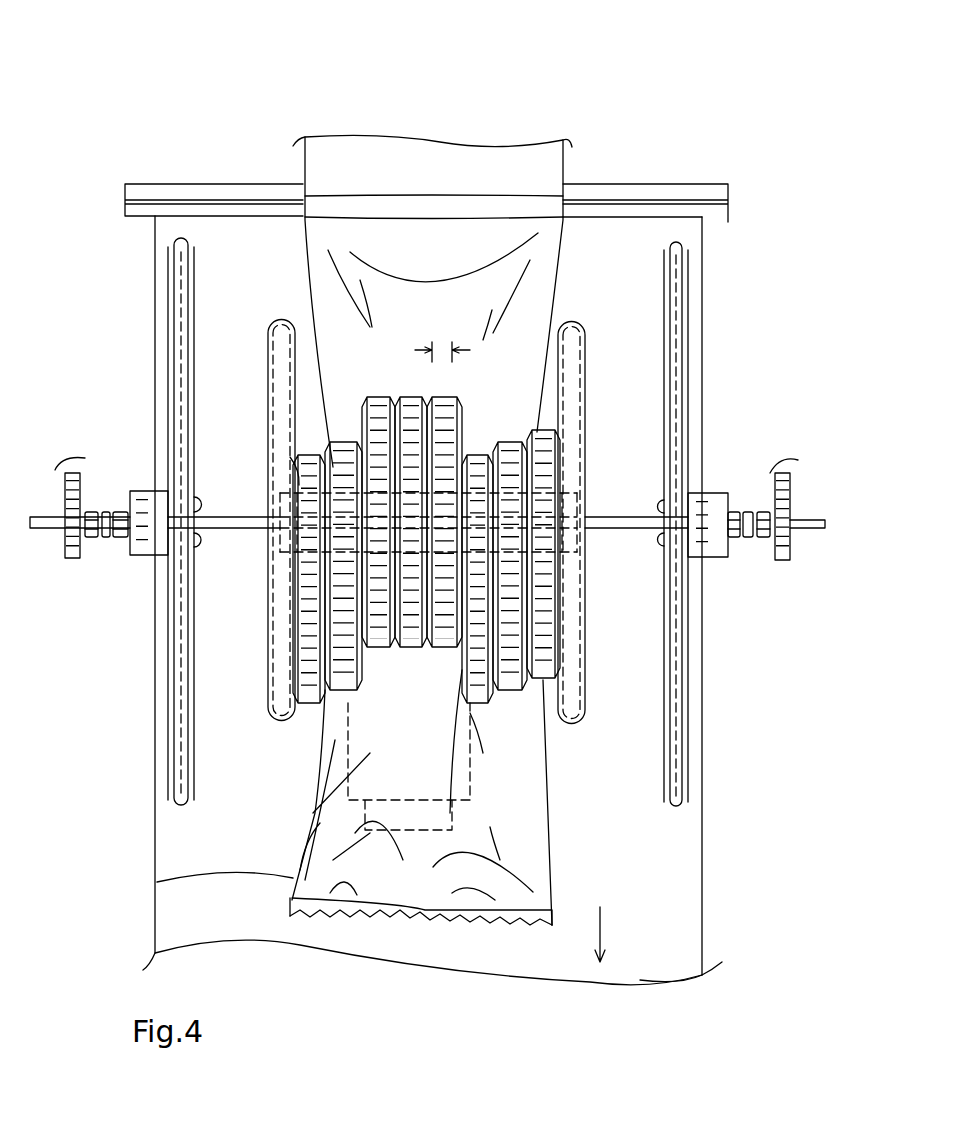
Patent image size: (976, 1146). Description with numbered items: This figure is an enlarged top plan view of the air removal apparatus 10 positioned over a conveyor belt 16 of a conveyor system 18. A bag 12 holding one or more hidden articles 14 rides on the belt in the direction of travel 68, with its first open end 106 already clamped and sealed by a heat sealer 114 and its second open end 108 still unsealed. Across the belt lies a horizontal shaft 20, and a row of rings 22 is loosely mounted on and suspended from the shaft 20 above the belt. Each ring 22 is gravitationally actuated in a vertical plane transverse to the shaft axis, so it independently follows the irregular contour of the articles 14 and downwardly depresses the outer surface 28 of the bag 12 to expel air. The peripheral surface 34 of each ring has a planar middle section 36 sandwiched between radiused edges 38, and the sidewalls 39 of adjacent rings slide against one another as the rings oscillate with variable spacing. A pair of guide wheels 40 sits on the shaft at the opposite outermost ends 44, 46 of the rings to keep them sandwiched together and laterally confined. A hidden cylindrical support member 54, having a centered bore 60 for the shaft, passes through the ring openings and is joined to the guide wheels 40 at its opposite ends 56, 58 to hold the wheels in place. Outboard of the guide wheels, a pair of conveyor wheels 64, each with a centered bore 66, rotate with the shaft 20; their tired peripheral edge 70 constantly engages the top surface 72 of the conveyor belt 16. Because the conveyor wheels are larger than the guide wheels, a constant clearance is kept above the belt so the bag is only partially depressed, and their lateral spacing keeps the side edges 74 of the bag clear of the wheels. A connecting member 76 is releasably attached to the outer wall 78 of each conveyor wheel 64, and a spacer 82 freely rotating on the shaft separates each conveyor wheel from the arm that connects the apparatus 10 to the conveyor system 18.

The air removal apparatus 10 is at (106, 92).
The bag 12 is at (157, 882).
The articles 14 is at (370, 753).
The conveyor belt 16 is at (605, 863).
The conveyor system 18 is at (728, 887).
The shaft 20 is at (40, 527).
The rings 22 is at (405, 395).
The outer surface 28 is at (413, 720).
The peripheral surface 34 is at (393, 398).
The planar middle section 36 is at (489, 432).
The radiused edges 38 is at (380, 395).
The sidewalls 39 is at (452, 800).
The guide wheels 40 is at (282, 322).
The outermost end 44 is at (299, 457).
The outermost end 46 is at (530, 432).
The cylindrical support member 54 is at (548, 448).
The end 56 is at (270, 548).
The end 58 is at (588, 553).
The centered bore 60 is at (568, 490).
The conveyor wheels 64 is at (167, 590).
The centered bore 66 is at (202, 500).
The direction of travel 68 is at (603, 932).
The peripheral edge 70 is at (180, 645).
The top surface 72 is at (675, 830).
The side edges 74 is at (335, 736).
The connecting member 76 is at (708, 545).
The outer wall 78 is at (688, 728).
The spacers 82 is at (748, 512).
The first open end 106 is at (398, 897).
The second open end 108 is at (425, 216).
The heat sealer 114 is at (718, 193).